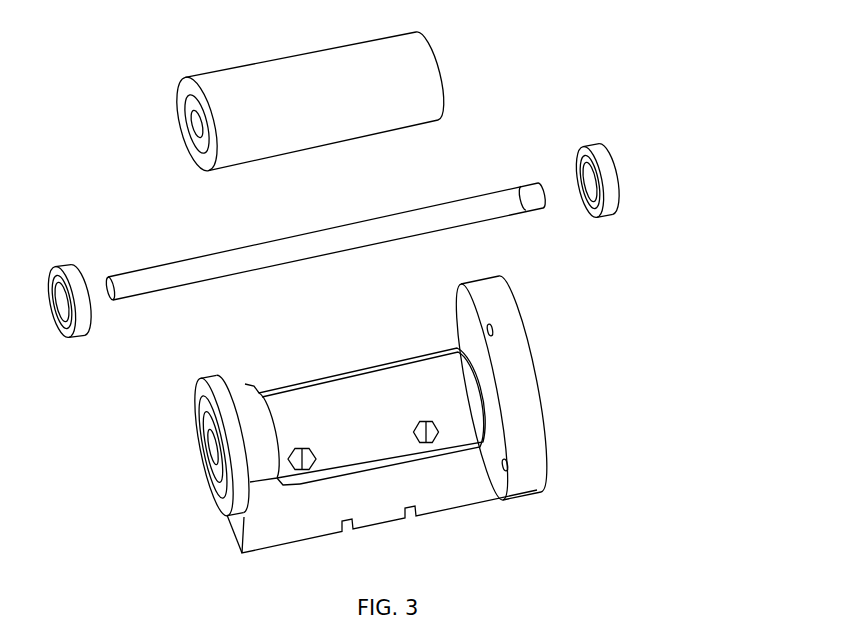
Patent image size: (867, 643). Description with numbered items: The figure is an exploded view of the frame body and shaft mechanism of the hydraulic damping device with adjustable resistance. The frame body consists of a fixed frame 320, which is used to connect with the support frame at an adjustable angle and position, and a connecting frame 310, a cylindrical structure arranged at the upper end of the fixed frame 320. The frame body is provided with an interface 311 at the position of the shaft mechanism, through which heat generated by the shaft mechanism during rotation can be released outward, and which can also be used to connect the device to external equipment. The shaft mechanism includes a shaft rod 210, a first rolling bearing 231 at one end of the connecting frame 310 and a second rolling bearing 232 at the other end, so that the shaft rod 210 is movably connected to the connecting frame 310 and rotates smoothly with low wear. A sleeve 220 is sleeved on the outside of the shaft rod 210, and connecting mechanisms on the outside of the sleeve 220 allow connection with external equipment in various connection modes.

The shaft rod 210 is at (505, 202).
The sleeve 220 is at (222, 100).
The first rolling bearing 231 is at (600, 200).
The second rolling bearing 232 is at (78, 318).
The connecting frame 310 is at (495, 393).
The interface 311 is at (425, 450).
The fixed frame 320 is at (293, 503).